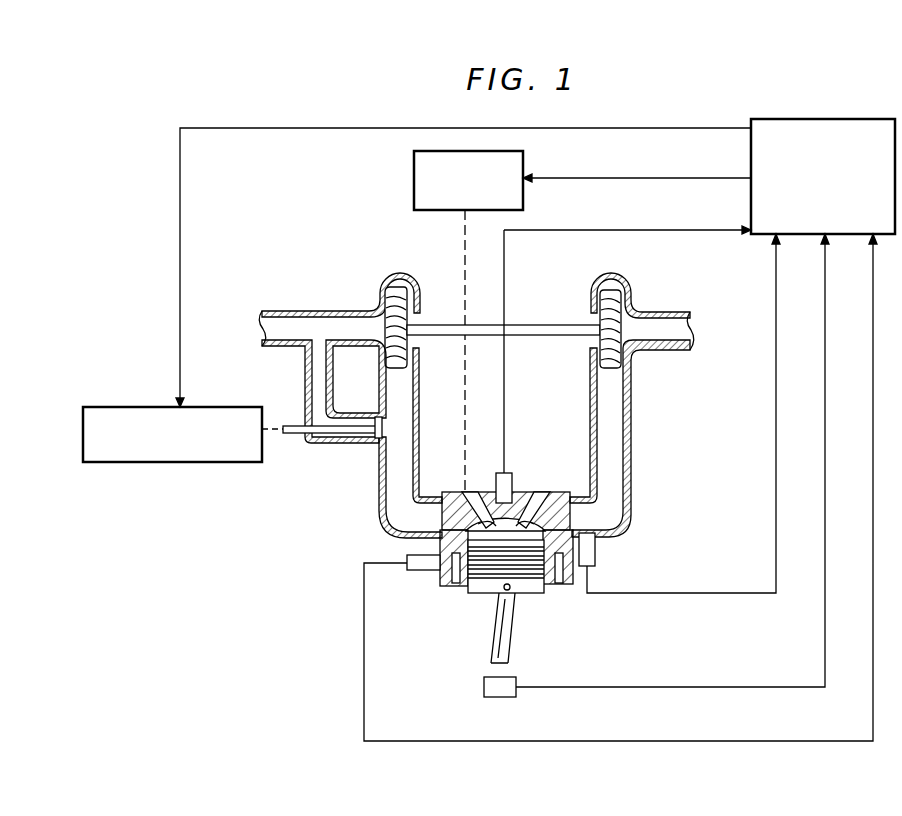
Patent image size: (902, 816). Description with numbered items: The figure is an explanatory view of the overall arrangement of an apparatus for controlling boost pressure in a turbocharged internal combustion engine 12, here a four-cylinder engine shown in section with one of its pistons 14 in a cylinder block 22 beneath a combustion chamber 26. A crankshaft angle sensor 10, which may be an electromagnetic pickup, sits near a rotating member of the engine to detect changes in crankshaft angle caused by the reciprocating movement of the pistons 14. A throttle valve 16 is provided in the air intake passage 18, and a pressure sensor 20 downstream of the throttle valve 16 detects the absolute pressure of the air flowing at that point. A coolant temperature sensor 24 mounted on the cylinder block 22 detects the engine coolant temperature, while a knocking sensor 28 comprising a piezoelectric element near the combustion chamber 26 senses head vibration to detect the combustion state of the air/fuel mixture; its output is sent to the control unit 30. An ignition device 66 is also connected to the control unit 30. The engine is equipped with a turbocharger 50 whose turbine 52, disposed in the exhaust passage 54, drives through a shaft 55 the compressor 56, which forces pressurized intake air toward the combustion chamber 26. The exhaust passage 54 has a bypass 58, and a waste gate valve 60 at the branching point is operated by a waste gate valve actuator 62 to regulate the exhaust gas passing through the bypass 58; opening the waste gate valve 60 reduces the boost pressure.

The crankshaft angle sensor 10 is at (487, 697).
The internal combustion engine 12 is at (582, 590).
The piston 14 is at (527, 595).
The throttle valve 16 is at (598, 513).
The air intake passage 18 is at (633, 472).
The pressure sensor 20 is at (597, 555).
The cylinder block 22 is at (456, 583).
The coolant temperature sensor 24 is at (407, 565).
The combustion chamber 26 is at (485, 532).
The knocking sensor 28 is at (510, 473).
The control unit 30 is at (811, 119).
The turbocharger 50 is at (476, 306).
The turbine 52 is at (378, 290).
The exhaust passage 54 is at (379, 507).
The shaft 55 is at (552, 324).
The compressor 56 is at (628, 300).
The bypass 58 is at (305, 385).
The waste gate valve 60 is at (360, 445).
The waste gate valve actuator 62 is at (181, 462).
The ignition device 66 is at (414, 180).